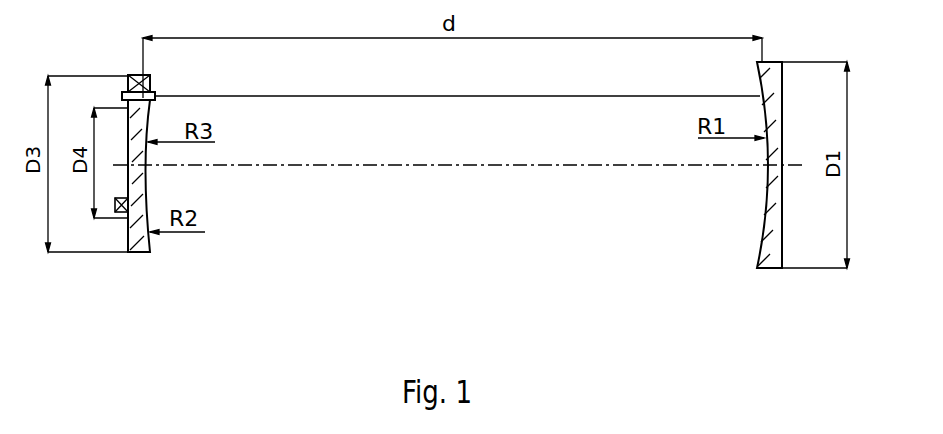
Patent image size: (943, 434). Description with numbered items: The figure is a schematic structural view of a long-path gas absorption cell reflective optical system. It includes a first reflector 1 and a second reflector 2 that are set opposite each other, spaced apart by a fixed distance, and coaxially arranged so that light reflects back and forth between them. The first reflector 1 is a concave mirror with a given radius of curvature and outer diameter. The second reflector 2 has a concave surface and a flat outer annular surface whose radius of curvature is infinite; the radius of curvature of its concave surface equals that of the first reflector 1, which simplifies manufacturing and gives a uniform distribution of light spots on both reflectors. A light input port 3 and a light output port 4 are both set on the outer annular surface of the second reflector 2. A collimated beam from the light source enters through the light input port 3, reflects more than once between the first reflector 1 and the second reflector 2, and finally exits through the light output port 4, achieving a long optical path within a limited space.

The first reflector 1 is at (775, 272).
The second reflector 2 is at (140, 254).
The light input port 3 is at (131, 77).
The light output port 4 is at (127, 212).